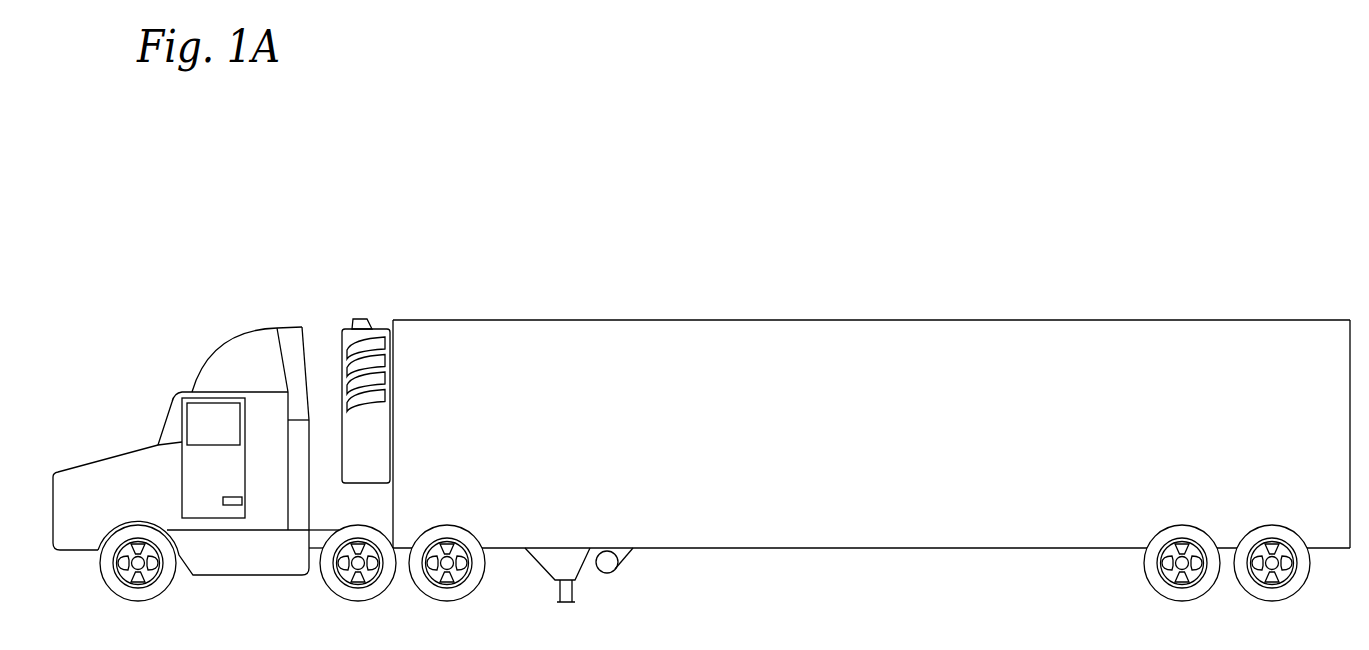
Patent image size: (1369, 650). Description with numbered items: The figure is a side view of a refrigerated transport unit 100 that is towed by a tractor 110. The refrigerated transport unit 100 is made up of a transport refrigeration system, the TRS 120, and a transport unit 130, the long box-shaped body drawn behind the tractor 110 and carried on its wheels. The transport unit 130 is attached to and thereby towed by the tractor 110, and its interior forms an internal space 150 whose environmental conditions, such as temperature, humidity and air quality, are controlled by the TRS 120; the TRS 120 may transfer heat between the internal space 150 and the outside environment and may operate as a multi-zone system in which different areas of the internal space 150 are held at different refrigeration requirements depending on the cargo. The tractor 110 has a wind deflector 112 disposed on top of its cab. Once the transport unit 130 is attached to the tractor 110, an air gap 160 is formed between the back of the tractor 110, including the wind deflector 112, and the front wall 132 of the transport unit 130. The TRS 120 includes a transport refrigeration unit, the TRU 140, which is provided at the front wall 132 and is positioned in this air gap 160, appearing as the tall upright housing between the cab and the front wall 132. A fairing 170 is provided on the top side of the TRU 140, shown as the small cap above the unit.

The refrigerated transport unit 100 is at (832, 258).
The tractor 110 is at (187, 390).
The wind deflector 112 is at (238, 337).
The TRS 120 is at (342, 270).
The transport unit 130 is at (1083, 320).
The front wall 132 is at (358, 485).
The transport refrigeration unit 140 is at (392, 502).
The internal space 150 is at (905, 367).
The air gap 160 is at (320, 343).
The fairing 170 is at (362, 318).